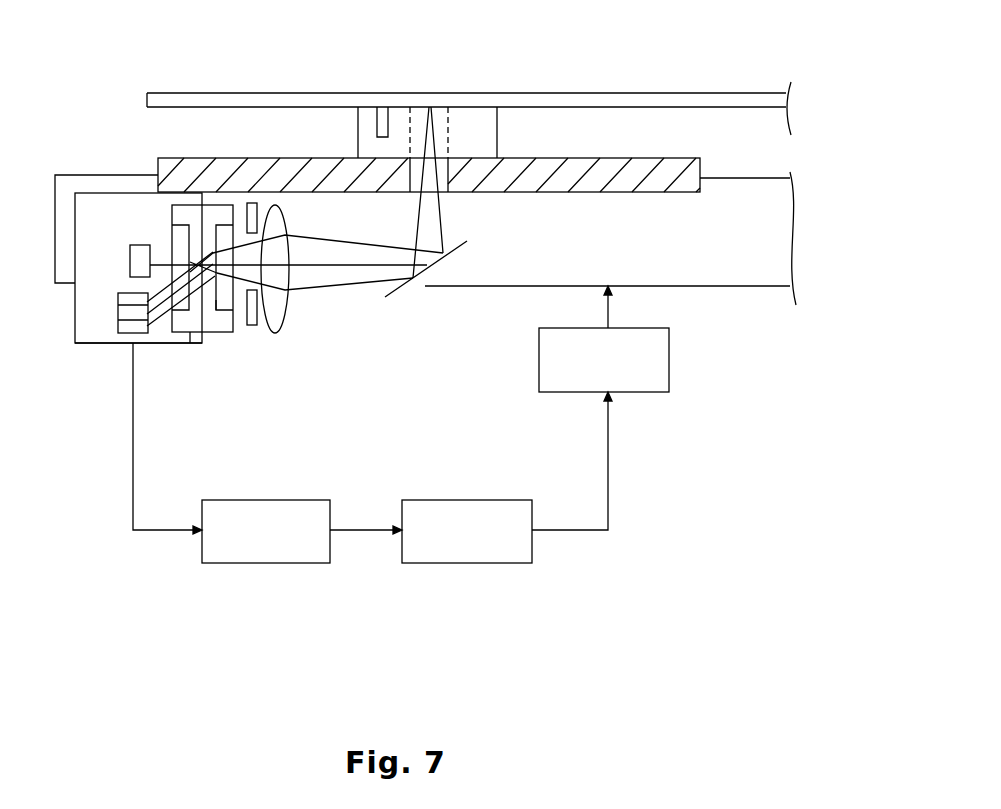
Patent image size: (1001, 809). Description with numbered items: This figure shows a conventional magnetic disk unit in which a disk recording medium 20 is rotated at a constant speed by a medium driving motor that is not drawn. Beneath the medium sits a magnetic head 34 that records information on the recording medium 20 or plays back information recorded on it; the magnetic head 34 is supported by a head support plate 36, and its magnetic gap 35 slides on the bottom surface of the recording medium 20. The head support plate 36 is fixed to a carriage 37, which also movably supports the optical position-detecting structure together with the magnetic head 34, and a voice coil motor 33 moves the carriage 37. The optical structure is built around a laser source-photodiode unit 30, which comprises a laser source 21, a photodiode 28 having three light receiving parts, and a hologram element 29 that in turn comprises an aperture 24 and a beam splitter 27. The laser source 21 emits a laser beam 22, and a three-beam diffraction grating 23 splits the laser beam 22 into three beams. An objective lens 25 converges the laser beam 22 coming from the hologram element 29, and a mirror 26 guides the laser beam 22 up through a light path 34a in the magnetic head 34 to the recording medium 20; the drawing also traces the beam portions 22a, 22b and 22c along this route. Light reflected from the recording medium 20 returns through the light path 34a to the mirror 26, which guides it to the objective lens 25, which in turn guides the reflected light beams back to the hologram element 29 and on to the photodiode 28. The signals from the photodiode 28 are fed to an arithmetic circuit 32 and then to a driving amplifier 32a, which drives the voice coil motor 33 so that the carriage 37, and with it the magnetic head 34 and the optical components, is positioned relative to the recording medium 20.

The disk recording medium 20 is at (735, 93).
The laser source 21 is at (128, 264).
The laser beam 22 is at (163, 258).
The reflecting mirror 22a is at (373, 265).
The upper light beam 22b is at (364, 244).
The lower light beam 22c is at (362, 283).
The 3-beam diffraction grating 23 is at (190, 345).
The aperture 24 is at (257, 300).
The objective lens 25 is at (287, 313).
The mirror 26 is at (463, 243).
The beam splitter 27 is at (218, 306).
The photodiode 28 is at (118, 332).
The hologram element 29 is at (221, 333).
The laser source-photodiode unit 30 is at (127, 343).
The arithmetic circuit 32 is at (238, 557).
The driving amplifier 32a is at (467, 557).
The voice coil motor 33 is at (670, 368).
The magnetic head 34 is at (475, 117).
The light path 34a is at (448, 117).
The magnetic gap 35 is at (386, 110).
The head support plate 36 is at (700, 163).
The carriage 37 is at (780, 205).